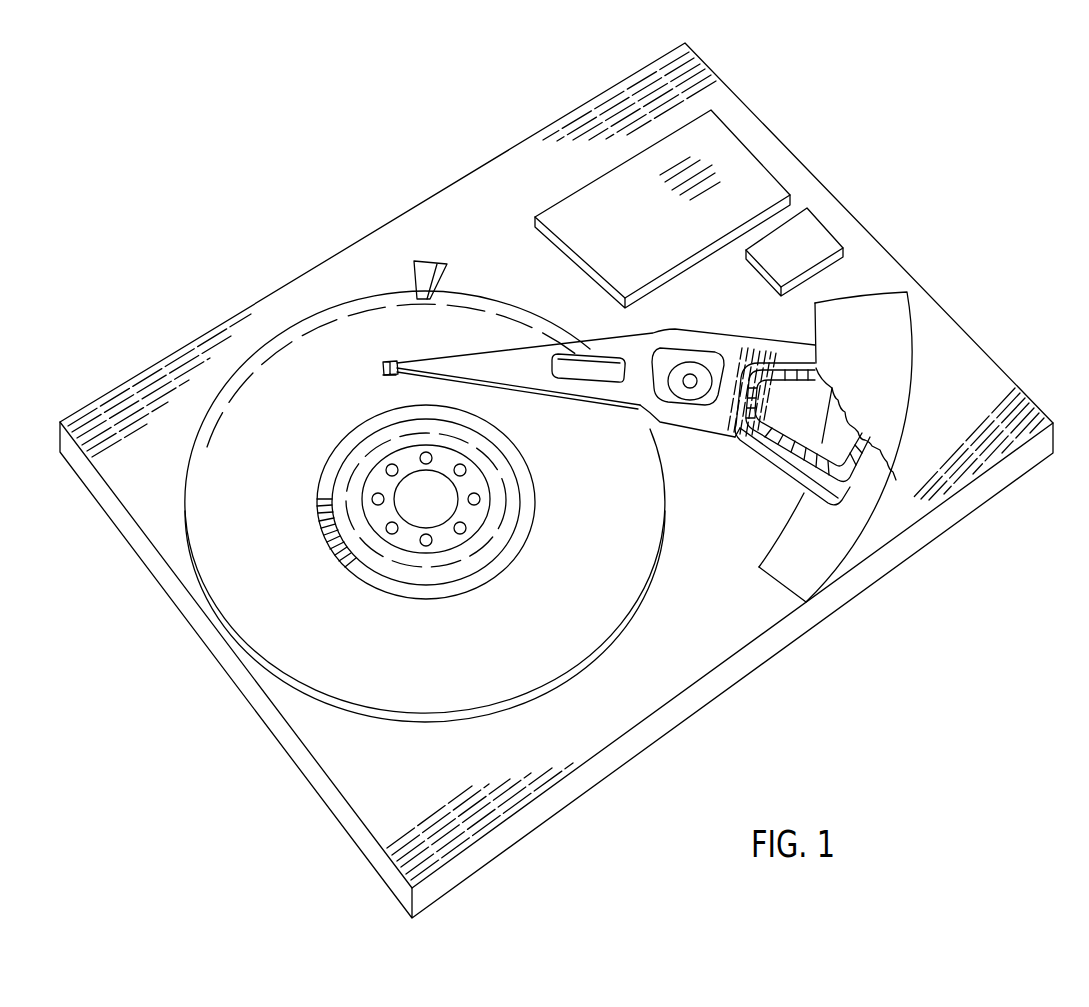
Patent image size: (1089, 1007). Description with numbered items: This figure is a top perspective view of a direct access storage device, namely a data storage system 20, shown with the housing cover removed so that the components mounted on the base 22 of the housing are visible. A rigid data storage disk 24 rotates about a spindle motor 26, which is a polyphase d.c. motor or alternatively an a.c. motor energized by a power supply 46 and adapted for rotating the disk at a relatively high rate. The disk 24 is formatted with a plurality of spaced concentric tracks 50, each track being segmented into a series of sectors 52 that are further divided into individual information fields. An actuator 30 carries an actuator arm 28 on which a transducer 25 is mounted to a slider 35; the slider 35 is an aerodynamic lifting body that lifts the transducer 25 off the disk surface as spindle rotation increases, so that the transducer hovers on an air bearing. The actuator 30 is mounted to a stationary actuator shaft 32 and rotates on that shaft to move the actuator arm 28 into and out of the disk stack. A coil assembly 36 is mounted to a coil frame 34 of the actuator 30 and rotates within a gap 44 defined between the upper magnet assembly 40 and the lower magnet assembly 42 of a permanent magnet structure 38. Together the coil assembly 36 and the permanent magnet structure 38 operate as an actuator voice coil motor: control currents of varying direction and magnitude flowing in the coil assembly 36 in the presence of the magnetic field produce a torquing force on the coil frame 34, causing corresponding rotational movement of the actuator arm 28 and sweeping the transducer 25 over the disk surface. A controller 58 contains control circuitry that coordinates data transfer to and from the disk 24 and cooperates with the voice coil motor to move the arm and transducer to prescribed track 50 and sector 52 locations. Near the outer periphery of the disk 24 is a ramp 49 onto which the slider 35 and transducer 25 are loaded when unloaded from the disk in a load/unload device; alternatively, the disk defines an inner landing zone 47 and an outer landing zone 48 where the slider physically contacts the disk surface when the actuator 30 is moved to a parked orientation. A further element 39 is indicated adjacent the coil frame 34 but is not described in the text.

The data storage system 20 is at (862, 168).
The base 22 is at (724, 680).
The data storage disk 24 is at (425, 498).
The transducer 25 is at (385, 374).
The spindle motor 26 is at (443, 523).
The actuator arm 28 is at (571, 389).
The actuator 30 is at (705, 425).
The actuator shaft 32 is at (690, 373).
The coil frame 34 is at (752, 346).
The slider 35 is at (383, 362).
The coil assembly 36 is at (802, 455).
The permanent magnet structure 38 is at (853, 443).
The coil support 39 is at (796, 496).
The upper magnet assembly 40 is at (898, 365).
The lower magnet assembly 42 is at (777, 568).
The gap 44 is at (876, 470).
The power supply 46 is at (632, 246).
The inner landing zone 47 is at (433, 505).
The outer landing zone 48 is at (267, 357).
The ramp 49 is at (429, 258).
The track 50 is at (332, 450).
The sector 52 is at (319, 528).
The controller 58 is at (809, 259).